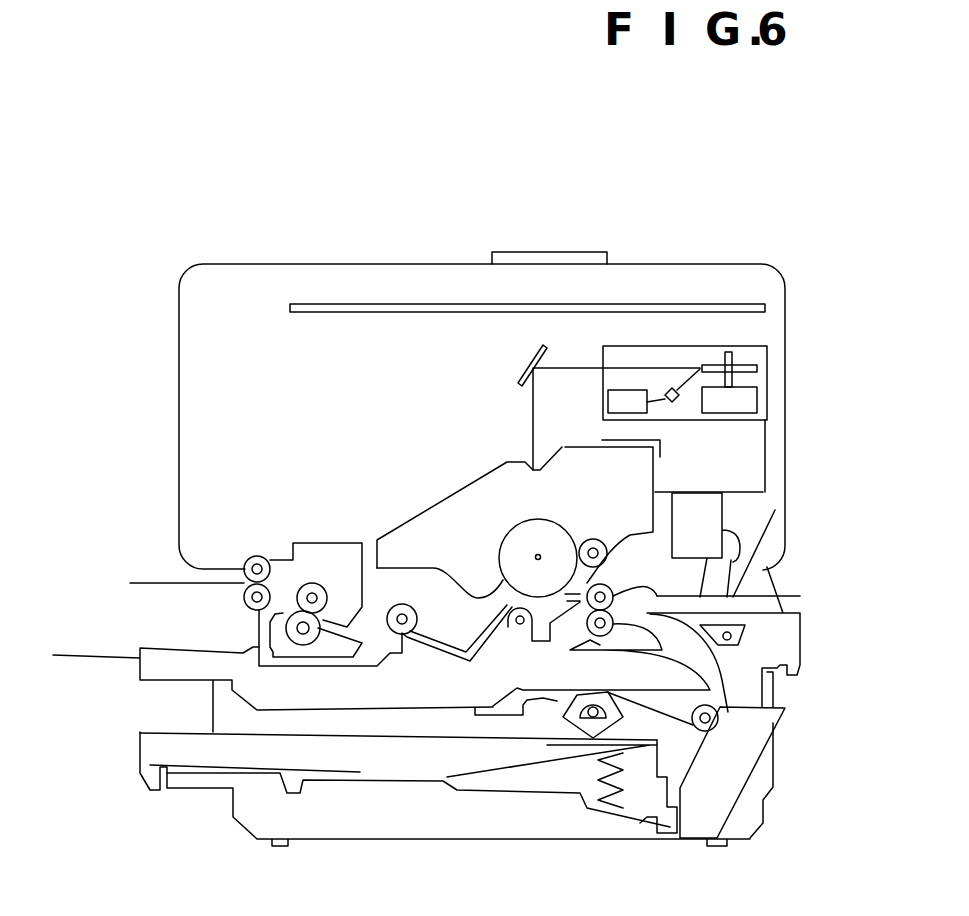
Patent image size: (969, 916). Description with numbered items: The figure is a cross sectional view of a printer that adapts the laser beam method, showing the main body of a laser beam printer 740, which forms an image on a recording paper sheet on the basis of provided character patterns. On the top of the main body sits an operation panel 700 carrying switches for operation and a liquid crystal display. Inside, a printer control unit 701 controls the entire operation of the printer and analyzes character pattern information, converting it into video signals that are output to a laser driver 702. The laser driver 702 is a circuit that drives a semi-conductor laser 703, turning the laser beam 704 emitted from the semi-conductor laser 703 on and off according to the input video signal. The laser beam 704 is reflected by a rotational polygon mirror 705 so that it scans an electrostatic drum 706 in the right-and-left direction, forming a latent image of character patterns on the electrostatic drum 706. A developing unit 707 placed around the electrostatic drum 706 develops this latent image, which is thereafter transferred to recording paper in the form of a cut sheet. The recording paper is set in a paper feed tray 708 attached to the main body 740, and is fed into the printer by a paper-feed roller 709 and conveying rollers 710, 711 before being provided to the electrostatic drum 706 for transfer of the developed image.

The operation panel 700 is at (532, 252).
The main body of laser beam printer 740 is at (683, 252).
The printer control unit 701 is at (743, 302).
The laser driver 702 is at (613, 403).
The semi-conductor laser 703 is at (673, 405).
The laser beam 704 is at (641, 368).
The rotational polygon mirror 705 is at (763, 363).
The electrostatic drum 706 is at (515, 527).
The developing unit 707 is at (417, 523).
The paper feed tray 708 is at (137, 778).
The paper-feed roller 709 is at (583, 717).
The conveying roller 710 is at (720, 723).
The conveying roller 711 is at (593, 650).